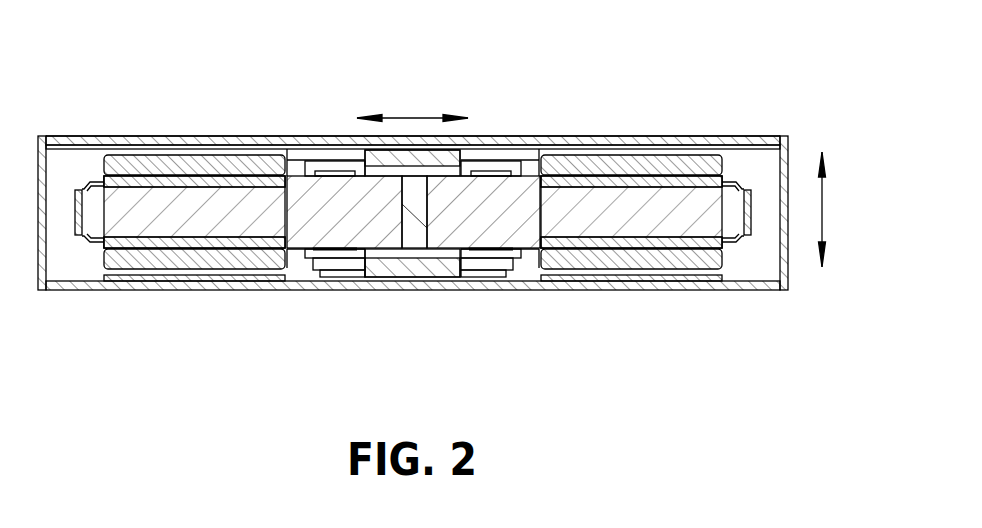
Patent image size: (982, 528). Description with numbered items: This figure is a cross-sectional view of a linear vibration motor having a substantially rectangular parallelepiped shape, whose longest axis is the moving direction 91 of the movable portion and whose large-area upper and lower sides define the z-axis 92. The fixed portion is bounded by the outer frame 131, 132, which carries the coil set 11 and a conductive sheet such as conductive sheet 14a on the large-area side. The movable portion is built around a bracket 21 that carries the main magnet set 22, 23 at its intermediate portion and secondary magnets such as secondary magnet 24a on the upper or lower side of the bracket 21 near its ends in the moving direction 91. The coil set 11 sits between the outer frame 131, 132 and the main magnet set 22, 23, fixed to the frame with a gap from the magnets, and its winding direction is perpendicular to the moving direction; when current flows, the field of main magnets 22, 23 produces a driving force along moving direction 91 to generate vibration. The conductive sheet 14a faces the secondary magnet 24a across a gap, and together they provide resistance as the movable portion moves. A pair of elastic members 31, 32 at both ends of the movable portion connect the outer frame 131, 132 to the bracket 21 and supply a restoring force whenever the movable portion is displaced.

The coil set 11 is at (450, 156).
The conductive sheet 14a is at (620, 142).
The bracket 21 is at (205, 195).
The main magnet 22 is at (335, 215).
The main magnet 23 is at (475, 207).
The secondary magnet 24a is at (678, 162).
The elastic member 31 is at (95, 217).
The elastic member 32 is at (733, 200).
The moving direction 91 is at (413, 117).
The z-axis 92 is at (823, 208).
The outer frame 131 is at (598, 283).
The outer frame 132 is at (78, 137).